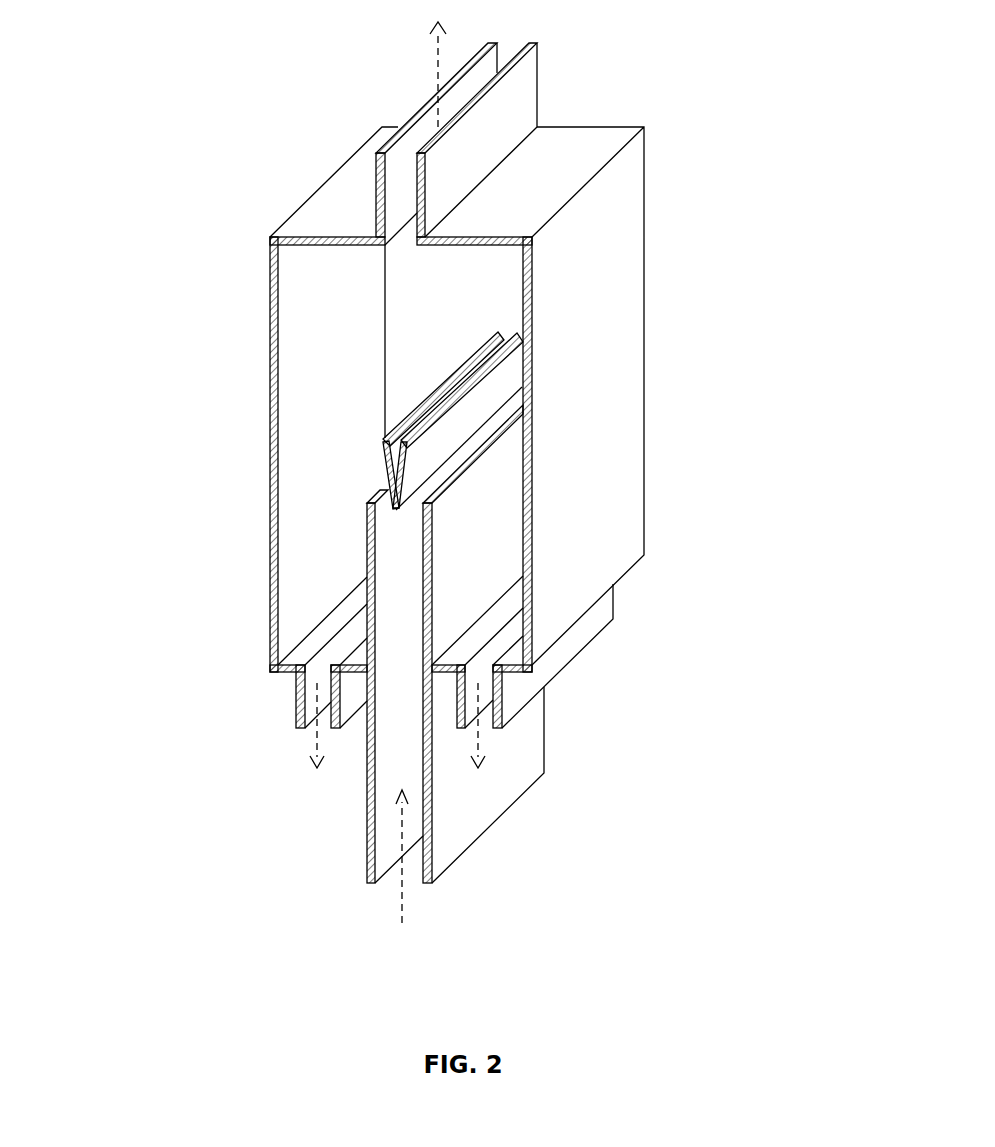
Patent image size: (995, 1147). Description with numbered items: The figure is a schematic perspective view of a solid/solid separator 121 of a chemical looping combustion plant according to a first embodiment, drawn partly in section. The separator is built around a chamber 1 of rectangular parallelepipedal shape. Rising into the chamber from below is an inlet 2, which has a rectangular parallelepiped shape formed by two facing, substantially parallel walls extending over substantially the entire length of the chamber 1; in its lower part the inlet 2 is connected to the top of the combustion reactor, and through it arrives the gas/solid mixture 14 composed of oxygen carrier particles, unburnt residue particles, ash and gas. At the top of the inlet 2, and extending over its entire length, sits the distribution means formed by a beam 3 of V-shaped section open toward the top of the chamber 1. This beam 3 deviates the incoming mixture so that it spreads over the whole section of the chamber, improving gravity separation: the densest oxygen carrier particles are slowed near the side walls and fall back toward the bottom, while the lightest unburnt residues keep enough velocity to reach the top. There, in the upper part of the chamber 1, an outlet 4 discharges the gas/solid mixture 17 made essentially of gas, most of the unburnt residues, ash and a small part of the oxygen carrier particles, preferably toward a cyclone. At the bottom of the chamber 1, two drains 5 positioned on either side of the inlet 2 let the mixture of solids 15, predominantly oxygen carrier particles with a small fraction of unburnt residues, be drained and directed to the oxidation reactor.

The solid/solid separator 121 is at (178, 202).
The chamber 1 is at (582, 395).
The inlet 2 is at (463, 558).
The distribution means (beam of V-shaped section) 3 is at (465, 418).
The outlet 4 is at (505, 100).
The drains 5 is at (295, 713).
The gas/solid mixture 14 is at (403, 918).
The mixture of solids 15 is at (317, 743).
The gas/solid mixture 17 is at (442, 76).